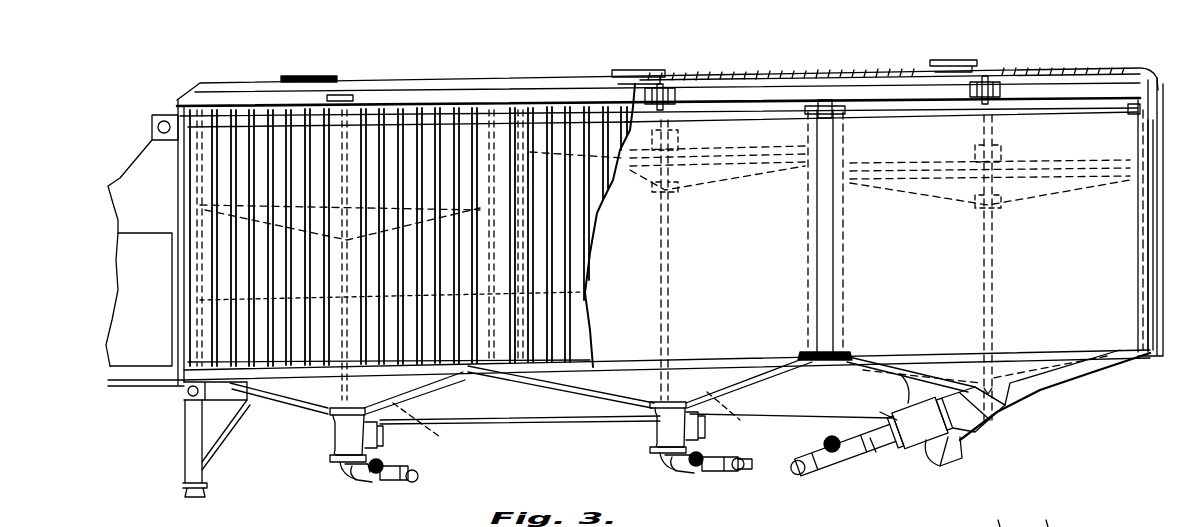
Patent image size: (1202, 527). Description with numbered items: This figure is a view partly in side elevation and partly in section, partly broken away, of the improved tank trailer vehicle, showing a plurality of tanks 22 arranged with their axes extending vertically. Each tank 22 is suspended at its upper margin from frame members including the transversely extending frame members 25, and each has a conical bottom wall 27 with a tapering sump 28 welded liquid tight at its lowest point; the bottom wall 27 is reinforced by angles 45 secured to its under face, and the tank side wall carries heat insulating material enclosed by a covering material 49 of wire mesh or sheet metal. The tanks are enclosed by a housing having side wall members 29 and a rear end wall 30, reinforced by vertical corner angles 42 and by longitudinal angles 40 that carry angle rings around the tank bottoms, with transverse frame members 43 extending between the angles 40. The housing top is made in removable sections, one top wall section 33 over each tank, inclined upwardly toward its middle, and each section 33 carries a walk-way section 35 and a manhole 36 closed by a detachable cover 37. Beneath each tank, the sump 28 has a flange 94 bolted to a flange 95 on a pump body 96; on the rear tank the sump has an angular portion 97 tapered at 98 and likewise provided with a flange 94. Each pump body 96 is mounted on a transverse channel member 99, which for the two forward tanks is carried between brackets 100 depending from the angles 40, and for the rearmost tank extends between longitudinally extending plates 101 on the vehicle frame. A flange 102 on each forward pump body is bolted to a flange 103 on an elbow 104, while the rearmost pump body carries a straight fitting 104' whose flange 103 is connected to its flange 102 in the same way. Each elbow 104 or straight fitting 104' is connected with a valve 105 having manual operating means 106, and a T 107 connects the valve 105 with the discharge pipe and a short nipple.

The tank 22 is at (440, 102).
The transversely extending frame member 25 is at (812, 118).
The conical bottom wall 27 is at (1040, 526).
The tapering sump 28 is at (385, 410).
The side wall member 29 is at (580, 308).
The rear end wall 30 is at (1160, 208).
The top wall section 33 is at (475, 84).
The walk-way section 35 is at (776, 74).
The manhole 36 is at (664, 88).
The detachable cover 37 is at (618, 70).
The longitudinal reinforcing angle 40 is at (834, 344).
The vertical corner reinforcing angle 42 is at (1152, 184).
The transverse frame member 43 is at (846, 354).
The reinforcing angle 45 is at (996, 526).
The covering material 49 is at (1140, 260).
The sump flange 94 is at (330, 410).
The pump body flange 95 is at (338, 426).
The pump body 96 is at (336, 457).
The angular portion 97 is at (1000, 412).
The tapered portion 98 is at (950, 398).
The transverse channel member 99 is at (380, 436).
The bracket 100 is at (428, 418).
The longitudinally extending plate 101 is at (548, 424).
The pump body flange 102 is at (338, 464).
The fitting flange 103 is at (350, 468).
The elbow 104 is at (488, 485).
The straight fitting 104' is at (886, 458).
The valve 105 is at (380, 480).
The manual operating means 106 is at (384, 460).
The T 107 is at (745, 462).